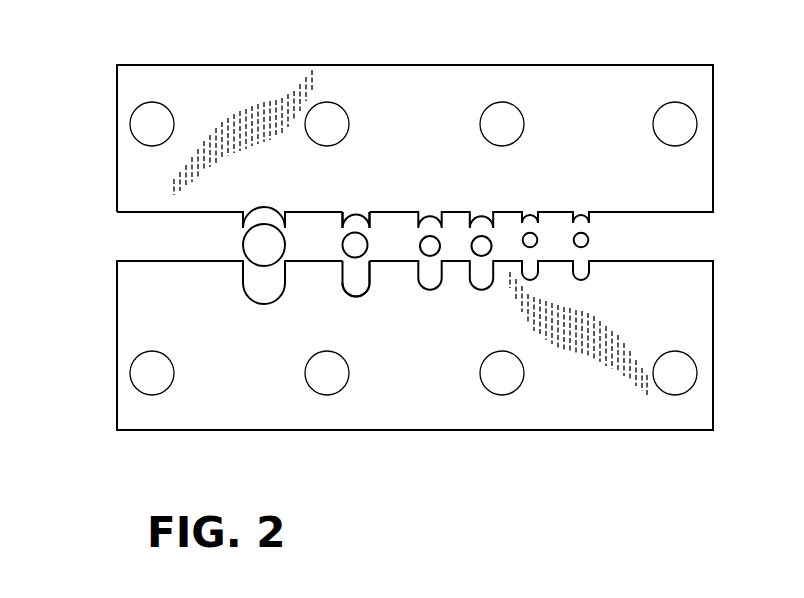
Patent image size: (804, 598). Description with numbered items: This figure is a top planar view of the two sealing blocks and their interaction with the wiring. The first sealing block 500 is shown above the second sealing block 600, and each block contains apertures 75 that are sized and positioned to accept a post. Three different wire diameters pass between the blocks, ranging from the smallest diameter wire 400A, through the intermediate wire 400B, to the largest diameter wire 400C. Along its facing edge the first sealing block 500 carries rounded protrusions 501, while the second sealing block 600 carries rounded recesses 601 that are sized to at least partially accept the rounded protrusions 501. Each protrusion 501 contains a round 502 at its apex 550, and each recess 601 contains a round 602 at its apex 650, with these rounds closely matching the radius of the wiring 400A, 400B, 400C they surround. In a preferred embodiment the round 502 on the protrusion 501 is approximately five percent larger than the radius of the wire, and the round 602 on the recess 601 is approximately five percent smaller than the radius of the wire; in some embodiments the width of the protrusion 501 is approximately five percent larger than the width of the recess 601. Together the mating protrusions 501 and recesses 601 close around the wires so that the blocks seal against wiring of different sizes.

The apertures 75 is at (140, 113).
The first sealing block 500 is at (630, 85).
The second sealing block 600 is at (135, 322).
The apex of the protrusion 550 is at (357, 216).
The rounded protrusions 501 is at (362, 226).
The round on the protrusion 502 is at (349, 206).
The apex of the recess 650 is at (358, 285).
The rounded recesses 601 is at (362, 283).
The round on the recess 602 is at (350, 298).
The smallest diameter wire 400A is at (585, 238).
The intermediate diameter wire 400B is at (429, 245).
The largest diameter wire 400C is at (243, 241).